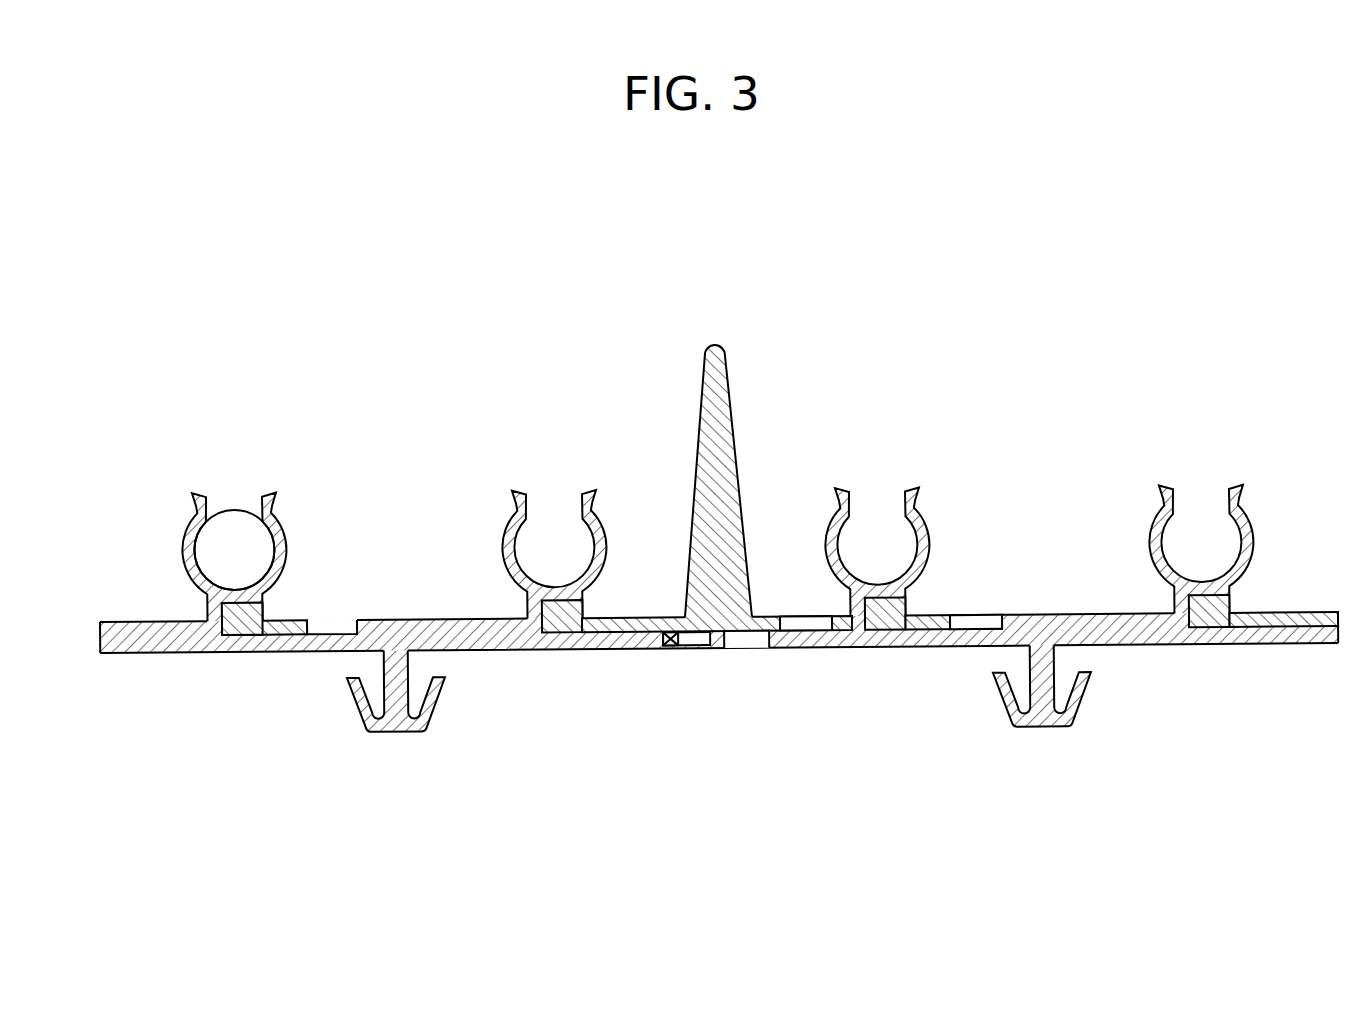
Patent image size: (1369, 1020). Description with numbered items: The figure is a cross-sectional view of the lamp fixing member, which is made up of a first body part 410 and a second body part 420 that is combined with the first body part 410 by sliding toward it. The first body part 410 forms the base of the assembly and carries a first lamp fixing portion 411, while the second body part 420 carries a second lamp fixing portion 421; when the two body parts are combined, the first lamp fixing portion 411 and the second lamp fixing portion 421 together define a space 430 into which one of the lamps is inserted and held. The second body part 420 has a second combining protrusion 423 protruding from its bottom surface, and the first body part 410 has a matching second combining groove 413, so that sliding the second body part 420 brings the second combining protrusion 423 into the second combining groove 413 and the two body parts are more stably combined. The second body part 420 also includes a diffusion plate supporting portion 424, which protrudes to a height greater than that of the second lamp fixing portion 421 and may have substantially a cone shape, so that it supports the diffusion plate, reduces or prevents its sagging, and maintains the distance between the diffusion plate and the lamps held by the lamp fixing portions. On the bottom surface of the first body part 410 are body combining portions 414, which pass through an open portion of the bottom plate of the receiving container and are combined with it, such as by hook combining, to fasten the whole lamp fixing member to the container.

The first body part 410 is at (1313, 653).
The first lamp fixing portion 411 is at (191, 523).
The second combining groove 413 is at (660, 650).
The body combining portion 414 is at (1042, 735).
The second body part 420 is at (1313, 636).
The second lamp fixing portion 421 is at (279, 523).
The second combining protrusion 423 is at (676, 652).
The diffusion plate supporting portion 424 is at (709, 403).
The space 430 is at (243, 546).